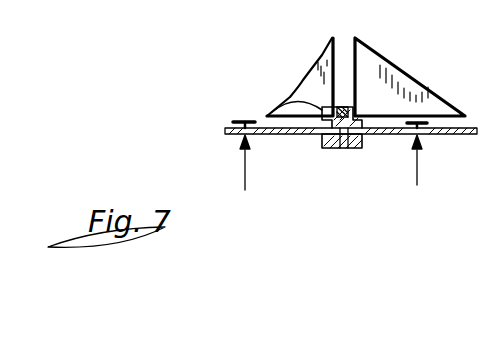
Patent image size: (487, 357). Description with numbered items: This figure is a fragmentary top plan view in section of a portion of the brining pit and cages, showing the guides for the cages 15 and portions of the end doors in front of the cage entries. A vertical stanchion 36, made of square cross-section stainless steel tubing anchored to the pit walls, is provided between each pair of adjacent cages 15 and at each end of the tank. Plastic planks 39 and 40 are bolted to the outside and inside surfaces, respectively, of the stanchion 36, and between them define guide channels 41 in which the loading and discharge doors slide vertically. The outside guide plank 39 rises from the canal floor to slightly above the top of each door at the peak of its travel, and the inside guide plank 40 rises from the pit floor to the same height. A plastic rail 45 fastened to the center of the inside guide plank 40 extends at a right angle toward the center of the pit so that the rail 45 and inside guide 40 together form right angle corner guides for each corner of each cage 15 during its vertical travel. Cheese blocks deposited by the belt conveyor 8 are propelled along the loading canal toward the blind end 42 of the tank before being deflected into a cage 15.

The cage 15 is at (282, 72).
The inside guide plank 40 is at (290, 97).
The plastic rail 45 is at (343, 107).
The blind end 42 is at (226, 133).
The vertical stanchion 36 is at (335, 146).
The guide channel 41 is at (322, 144).
The outside guide plank 39 is at (352, 152).
The belt conveyor 8 is at (330, 168).